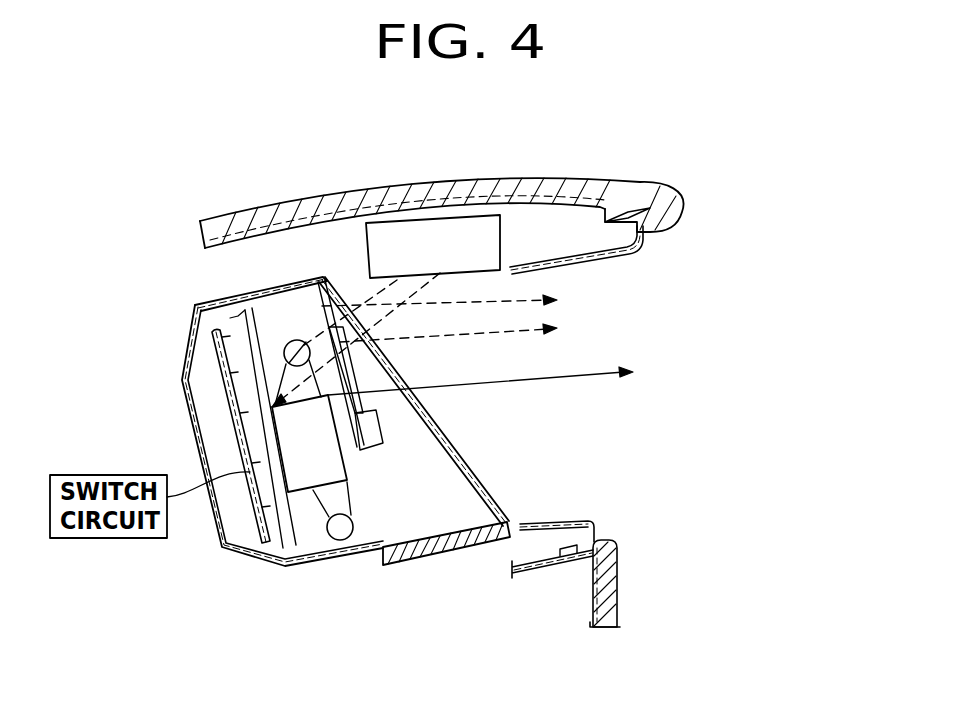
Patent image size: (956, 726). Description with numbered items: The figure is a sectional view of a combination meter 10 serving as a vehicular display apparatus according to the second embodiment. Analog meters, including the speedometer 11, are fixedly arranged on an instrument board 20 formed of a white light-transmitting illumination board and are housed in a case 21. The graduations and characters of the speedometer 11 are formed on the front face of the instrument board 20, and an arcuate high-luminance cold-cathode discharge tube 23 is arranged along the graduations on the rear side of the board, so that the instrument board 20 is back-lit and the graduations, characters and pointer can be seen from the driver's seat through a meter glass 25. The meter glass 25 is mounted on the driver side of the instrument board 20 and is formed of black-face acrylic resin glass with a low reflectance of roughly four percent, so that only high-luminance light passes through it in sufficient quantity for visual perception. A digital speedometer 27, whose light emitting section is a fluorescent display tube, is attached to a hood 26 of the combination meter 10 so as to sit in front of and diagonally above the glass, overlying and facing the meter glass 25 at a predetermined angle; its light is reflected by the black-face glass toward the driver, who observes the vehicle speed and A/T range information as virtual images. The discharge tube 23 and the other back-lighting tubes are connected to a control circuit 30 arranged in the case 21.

The combination meter 10 is at (713, 279).
The speedometer 11 is at (303, 480).
The instrument board 20 is at (380, 500).
The case 21 is at (270, 292).
The cold-cathode discharge tube 23 is at (342, 532).
The meter glass 25 is at (472, 473).
The hood 26 is at (647, 205).
The digital speedometer 27 is at (478, 235).
The control circuit 30 is at (238, 432).